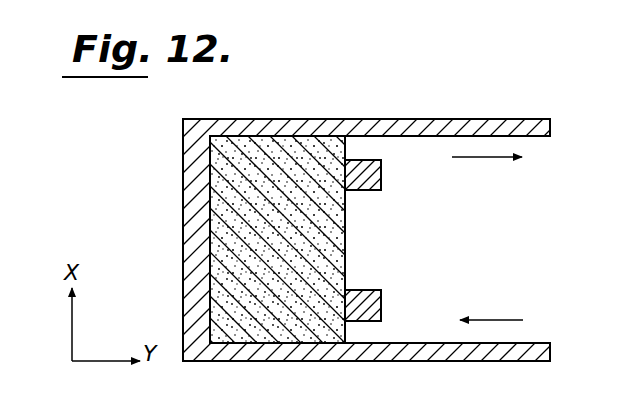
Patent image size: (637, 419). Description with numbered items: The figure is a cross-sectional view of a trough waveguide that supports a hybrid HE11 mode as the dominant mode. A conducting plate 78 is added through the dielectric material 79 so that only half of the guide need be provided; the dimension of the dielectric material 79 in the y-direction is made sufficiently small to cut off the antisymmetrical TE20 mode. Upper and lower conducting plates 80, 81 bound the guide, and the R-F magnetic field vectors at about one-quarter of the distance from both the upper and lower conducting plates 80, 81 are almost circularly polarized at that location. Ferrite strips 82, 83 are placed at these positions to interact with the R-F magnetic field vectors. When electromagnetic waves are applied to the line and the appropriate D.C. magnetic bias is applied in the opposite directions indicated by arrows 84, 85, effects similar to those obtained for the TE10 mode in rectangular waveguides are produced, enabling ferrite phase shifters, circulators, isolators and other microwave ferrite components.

The conducting plate 78 is at (192, 149).
The dielectric material 79 is at (223, 216).
The upper conducting plate 80 is at (435, 119).
The lower conducting plate 81 is at (405, 358).
The ferrite strip 82 is at (370, 191).
The ferrite strip 83 is at (378, 291).
The arrow 84 is at (483, 158).
The arrow 85 is at (493, 319).